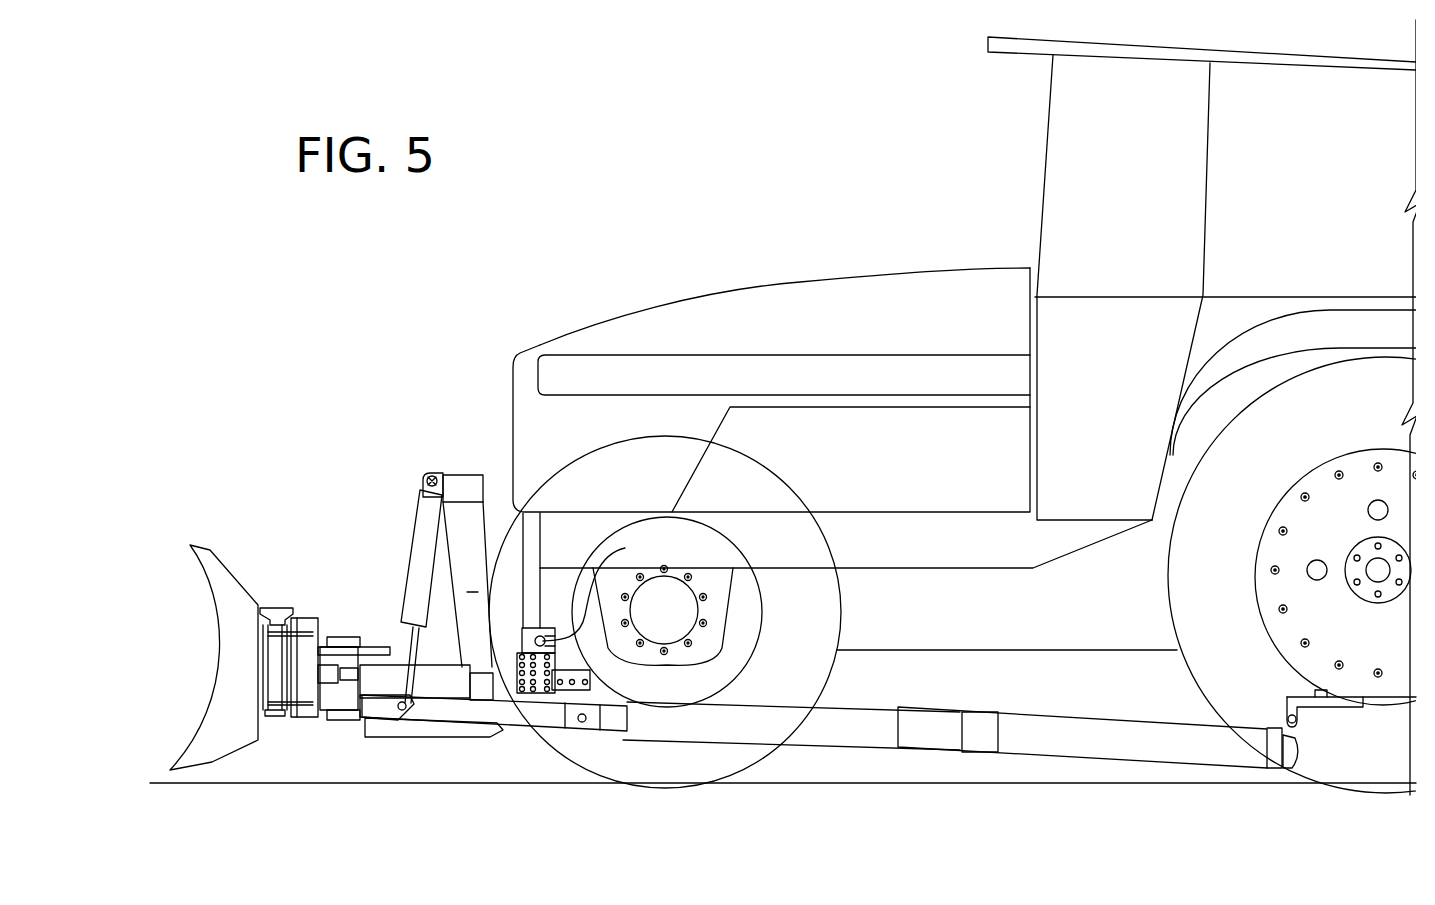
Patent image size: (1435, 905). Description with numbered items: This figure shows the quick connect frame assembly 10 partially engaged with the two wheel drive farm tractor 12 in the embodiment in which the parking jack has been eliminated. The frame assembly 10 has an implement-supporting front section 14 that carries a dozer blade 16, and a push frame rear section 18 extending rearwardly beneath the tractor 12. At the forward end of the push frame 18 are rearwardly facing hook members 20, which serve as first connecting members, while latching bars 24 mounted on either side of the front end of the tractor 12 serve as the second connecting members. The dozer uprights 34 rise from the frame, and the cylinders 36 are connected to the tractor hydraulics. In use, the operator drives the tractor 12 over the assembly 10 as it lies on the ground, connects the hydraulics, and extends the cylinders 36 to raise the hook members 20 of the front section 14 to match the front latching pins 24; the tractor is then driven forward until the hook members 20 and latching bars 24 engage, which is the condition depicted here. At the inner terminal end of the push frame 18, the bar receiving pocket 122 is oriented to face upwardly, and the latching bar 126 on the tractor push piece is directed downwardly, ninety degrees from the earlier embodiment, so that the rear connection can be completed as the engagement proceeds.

The quick connect frame assembly 10 is at (347, 462).
The two wheel drive farm tractor 12 is at (916, 262).
The implement-supporting front section 14 is at (308, 618).
The dozer blade 16 is at (208, 547).
The push frame rear section 18 is at (1060, 727).
The hook members 20 is at (525, 627).
The latching bars 24 is at (601, 587).
The dozer uprights 34 is at (470, 517).
The cylinders 36 is at (427, 517).
The bar receiving pocket 122 is at (1300, 748).
The latching bar 126 is at (1287, 707).